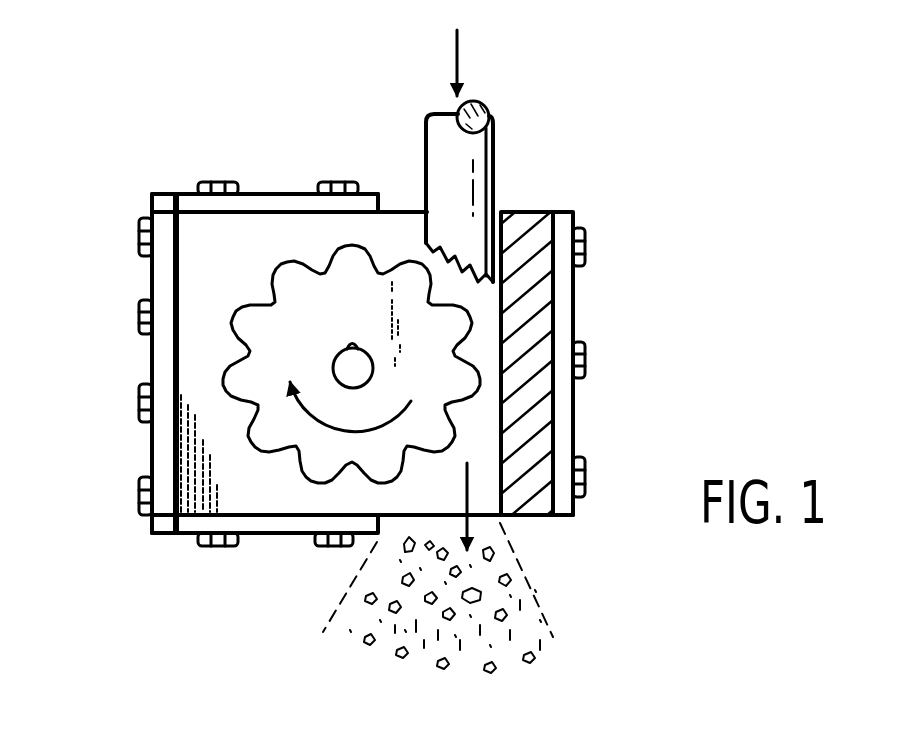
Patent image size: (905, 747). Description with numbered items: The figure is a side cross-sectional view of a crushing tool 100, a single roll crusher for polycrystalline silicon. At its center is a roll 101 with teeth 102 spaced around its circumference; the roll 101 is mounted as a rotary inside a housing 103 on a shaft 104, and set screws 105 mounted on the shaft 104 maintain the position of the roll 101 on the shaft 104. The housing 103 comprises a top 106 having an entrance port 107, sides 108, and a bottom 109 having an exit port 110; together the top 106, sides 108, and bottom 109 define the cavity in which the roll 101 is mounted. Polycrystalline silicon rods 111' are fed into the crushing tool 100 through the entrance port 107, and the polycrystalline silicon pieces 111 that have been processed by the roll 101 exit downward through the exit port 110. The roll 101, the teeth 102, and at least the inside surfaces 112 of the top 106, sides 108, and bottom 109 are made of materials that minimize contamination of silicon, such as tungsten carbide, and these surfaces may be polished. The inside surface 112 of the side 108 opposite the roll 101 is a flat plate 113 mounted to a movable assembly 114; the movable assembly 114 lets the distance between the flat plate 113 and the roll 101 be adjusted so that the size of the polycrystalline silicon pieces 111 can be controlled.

The crushing tool 100 is at (614, 240).
The roll 101 is at (433, 343).
The teeth 102 is at (507, 380).
The housing 103 is at (157, 453).
The shaft 104 is at (358, 370).
The set screws 105 is at (348, 345).
The top 106 is at (252, 194).
The entrance port 107 is at (399, 196).
The sides 108 is at (152, 271).
The bottom 109 is at (243, 548).
The exit port 110 is at (415, 585).
The polycrystalline silicon pieces 111 is at (397, 580).
The polycrystalline silicon rods 111' is at (508, 191).
The inside surfaces 112 is at (268, 213).
The flat plate 113 is at (510, 517).
The movable assembly 114 is at (577, 427).